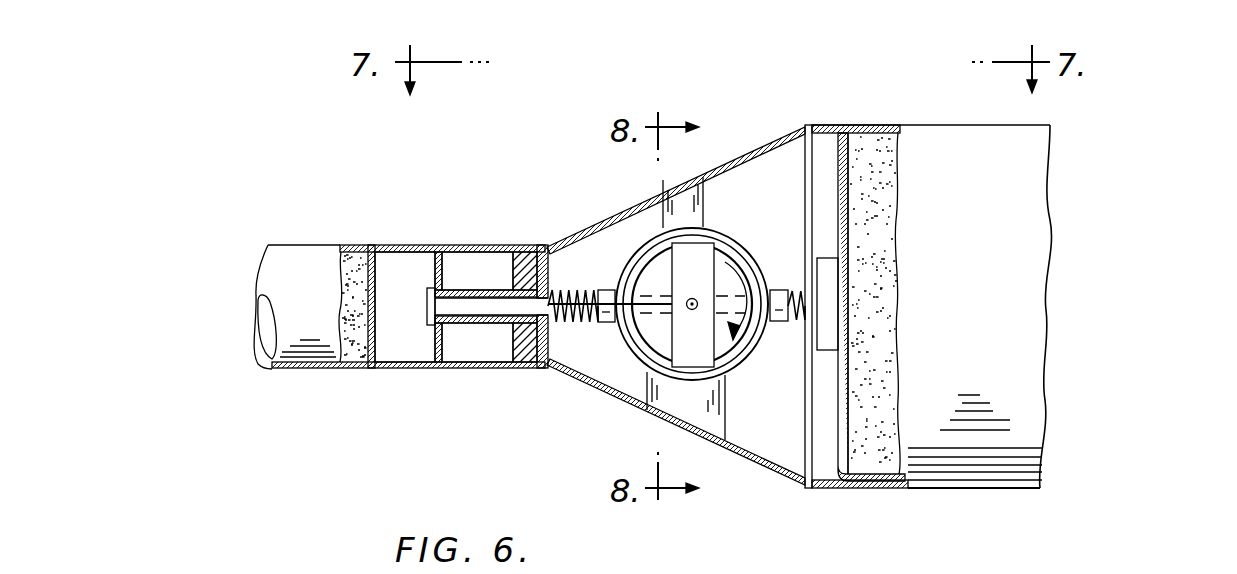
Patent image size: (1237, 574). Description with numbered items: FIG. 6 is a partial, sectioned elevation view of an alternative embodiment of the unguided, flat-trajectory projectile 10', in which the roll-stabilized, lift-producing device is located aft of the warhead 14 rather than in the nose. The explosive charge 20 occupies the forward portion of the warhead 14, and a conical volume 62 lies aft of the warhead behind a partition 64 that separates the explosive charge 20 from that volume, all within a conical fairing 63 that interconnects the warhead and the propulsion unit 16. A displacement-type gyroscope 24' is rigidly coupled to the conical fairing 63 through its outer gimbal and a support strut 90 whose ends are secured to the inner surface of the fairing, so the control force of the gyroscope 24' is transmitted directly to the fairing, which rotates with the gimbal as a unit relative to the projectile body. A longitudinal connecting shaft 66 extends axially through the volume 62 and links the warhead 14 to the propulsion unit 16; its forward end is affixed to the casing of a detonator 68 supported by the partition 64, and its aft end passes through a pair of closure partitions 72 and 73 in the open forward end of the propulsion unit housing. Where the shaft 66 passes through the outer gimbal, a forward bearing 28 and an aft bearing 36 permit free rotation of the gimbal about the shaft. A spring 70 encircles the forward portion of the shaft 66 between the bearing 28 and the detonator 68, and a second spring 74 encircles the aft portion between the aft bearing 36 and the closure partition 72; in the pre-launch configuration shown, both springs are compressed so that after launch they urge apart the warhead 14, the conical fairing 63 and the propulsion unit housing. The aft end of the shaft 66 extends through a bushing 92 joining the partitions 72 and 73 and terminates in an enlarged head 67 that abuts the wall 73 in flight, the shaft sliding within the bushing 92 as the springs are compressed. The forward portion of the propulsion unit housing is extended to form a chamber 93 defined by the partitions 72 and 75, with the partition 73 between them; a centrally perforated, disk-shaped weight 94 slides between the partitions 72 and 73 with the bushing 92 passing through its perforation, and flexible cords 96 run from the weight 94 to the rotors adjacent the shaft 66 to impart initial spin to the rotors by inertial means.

The projectile 10' is at (1178, 127).
The warhead 14 is at (932, 306).
The propulsion unit 16 is at (268, 280).
The explosive charge 20 is at (890, 392).
The displacement-type gyroscope 24' is at (712, 344).
The forward bearing 28 is at (792, 322).
The aft bearing 36 is at (607, 290).
The conical volume 62 is at (645, 276).
The conical fairing 63 is at (600, 390).
The partition 64 is at (838, 178).
The connecting shaft 66 is at (745, 270).
The enlarged head 67 is at (427, 301).
The detonator 68 is at (835, 285).
The spring 70 is at (779, 290).
The closure partition 72 is at (548, 340).
The closure partition 73 is at (437, 325).
The second spring 74 is at (590, 290).
The partition 75 is at (380, 364).
The support strut 90 is at (672, 400).
The bushing 92 is at (487, 290).
The chamber 93 is at (408, 307).
The disk-shaped weight 94 is at (524, 355).
The cords 96 is at (670, 303).